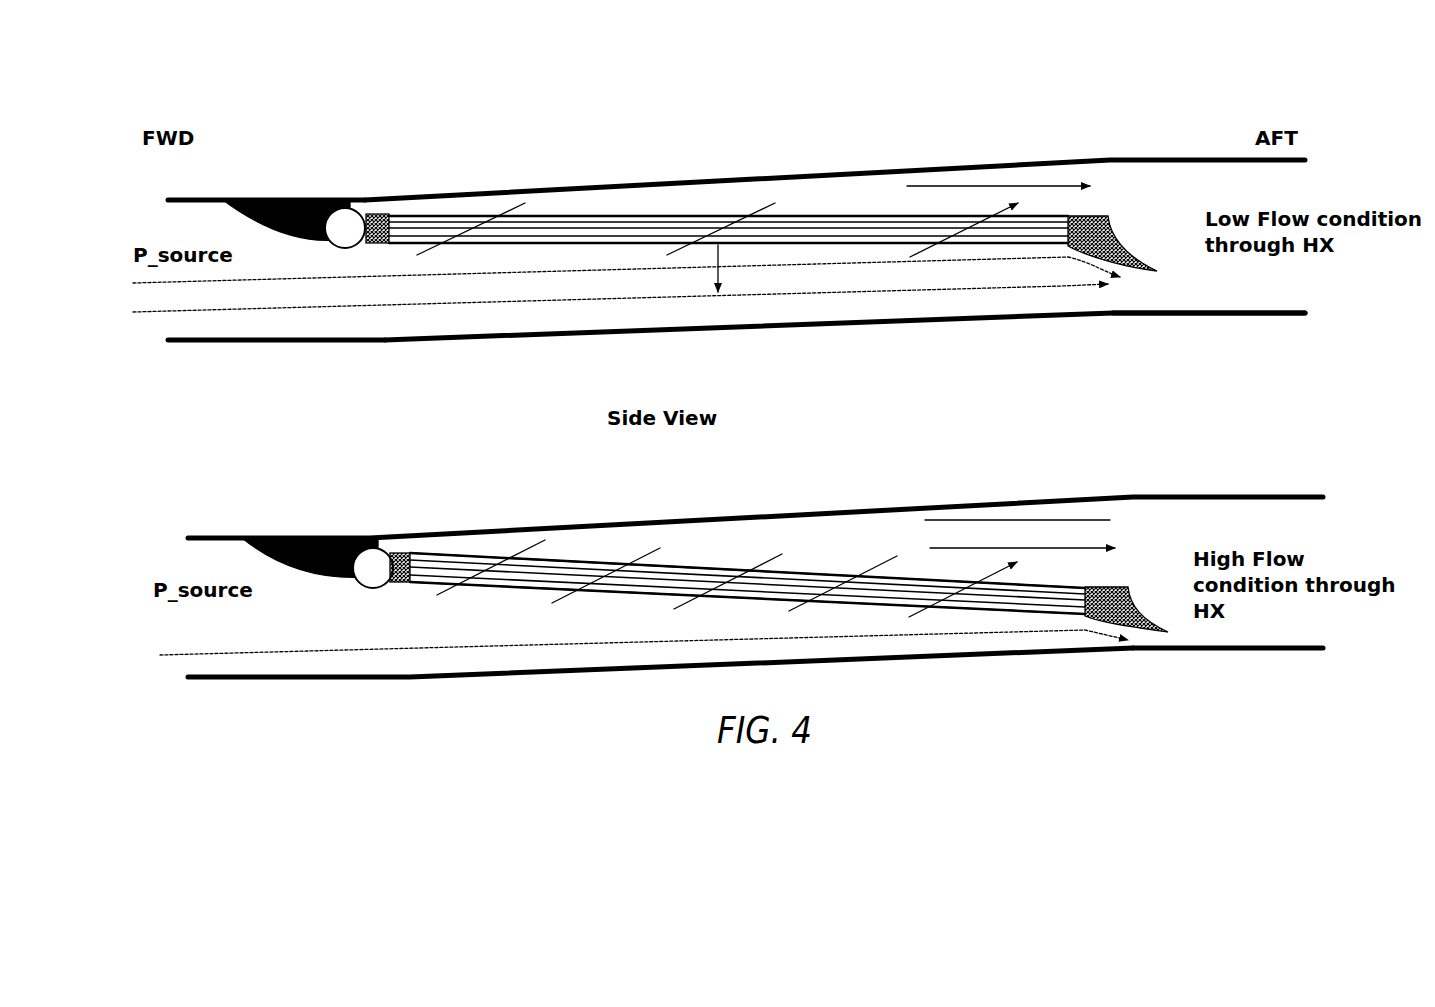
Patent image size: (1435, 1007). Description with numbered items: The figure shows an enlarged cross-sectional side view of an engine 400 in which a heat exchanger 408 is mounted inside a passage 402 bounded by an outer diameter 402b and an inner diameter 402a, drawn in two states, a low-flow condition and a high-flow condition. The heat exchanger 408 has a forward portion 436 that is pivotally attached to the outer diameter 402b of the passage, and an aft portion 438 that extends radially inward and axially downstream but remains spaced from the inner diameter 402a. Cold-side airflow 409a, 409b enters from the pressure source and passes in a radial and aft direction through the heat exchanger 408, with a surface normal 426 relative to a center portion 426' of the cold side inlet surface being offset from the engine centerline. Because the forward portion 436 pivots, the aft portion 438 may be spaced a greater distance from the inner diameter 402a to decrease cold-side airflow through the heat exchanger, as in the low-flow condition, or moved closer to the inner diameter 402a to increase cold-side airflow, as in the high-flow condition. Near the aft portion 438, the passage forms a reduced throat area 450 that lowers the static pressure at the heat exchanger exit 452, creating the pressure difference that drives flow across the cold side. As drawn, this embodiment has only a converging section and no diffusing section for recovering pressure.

The engine 400 is at (114, 220).
The passage 402 is at (192, 326).
The inner diameter of the passage 402a is at (452, 328).
The outer diameter of the passage 402b is at (668, 196).
The heat exchanger 408 is at (556, 214).
The cold-side airflow 409a is at (1062, 291).
The cold-side airflow 409b is at (1035, 185).
The surface normal 426 is at (765, 313).
The center portion 426' is at (802, 312).
The forward portion 436 is at (376, 213).
The aft portion 438 is at (1097, 213).
The reduced throat area 450 is at (1128, 291).
The heat exchanger exit 452 is at (1097, 183).